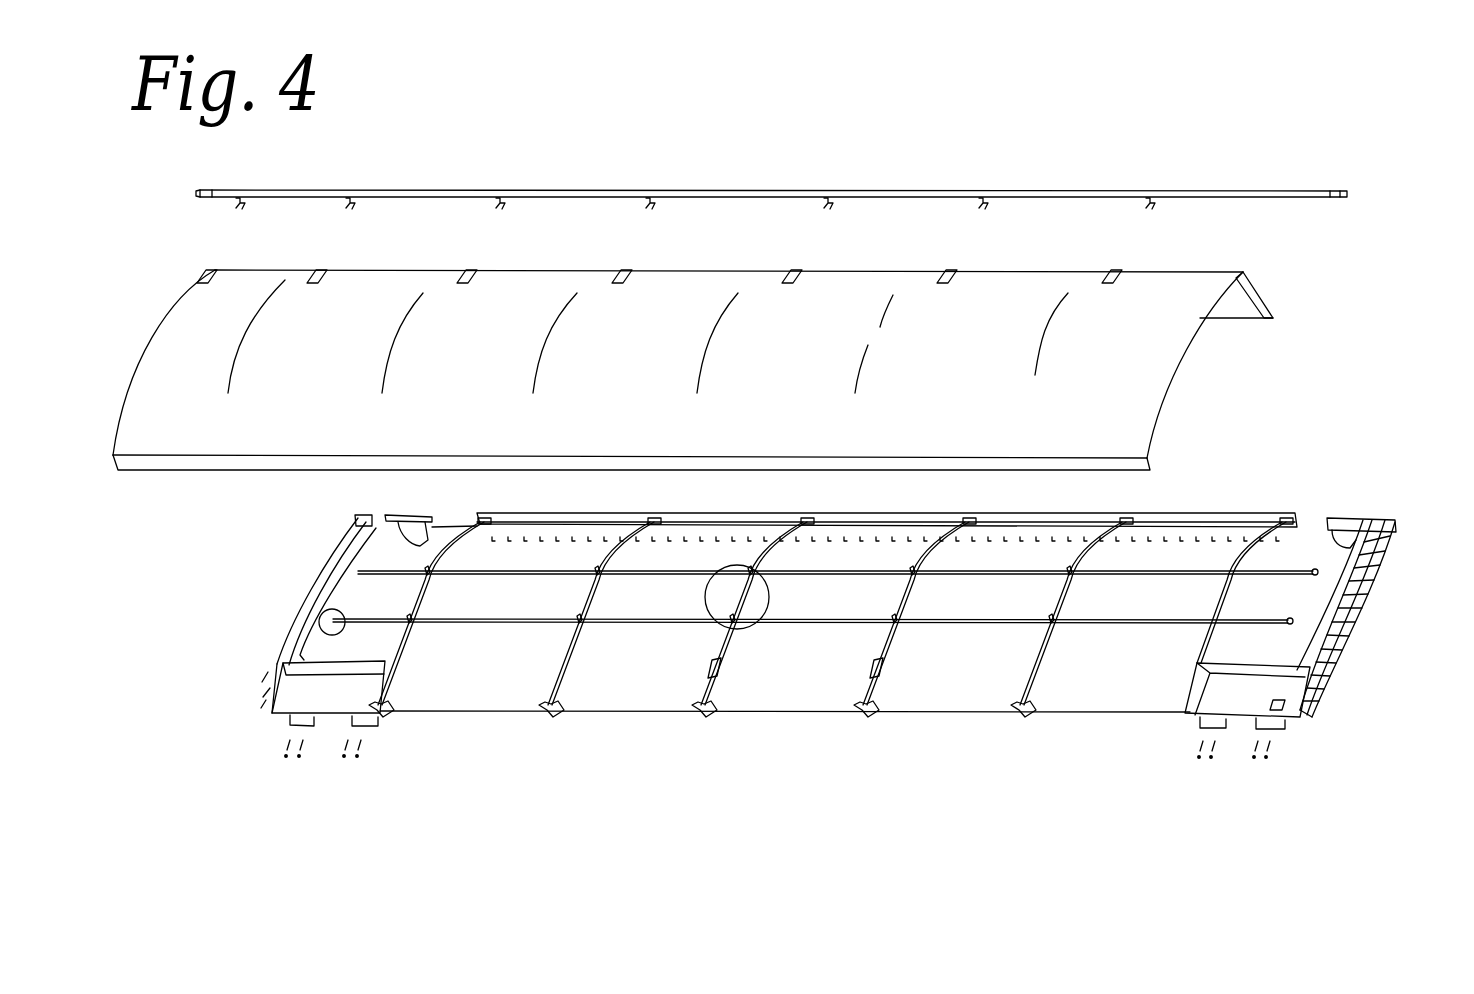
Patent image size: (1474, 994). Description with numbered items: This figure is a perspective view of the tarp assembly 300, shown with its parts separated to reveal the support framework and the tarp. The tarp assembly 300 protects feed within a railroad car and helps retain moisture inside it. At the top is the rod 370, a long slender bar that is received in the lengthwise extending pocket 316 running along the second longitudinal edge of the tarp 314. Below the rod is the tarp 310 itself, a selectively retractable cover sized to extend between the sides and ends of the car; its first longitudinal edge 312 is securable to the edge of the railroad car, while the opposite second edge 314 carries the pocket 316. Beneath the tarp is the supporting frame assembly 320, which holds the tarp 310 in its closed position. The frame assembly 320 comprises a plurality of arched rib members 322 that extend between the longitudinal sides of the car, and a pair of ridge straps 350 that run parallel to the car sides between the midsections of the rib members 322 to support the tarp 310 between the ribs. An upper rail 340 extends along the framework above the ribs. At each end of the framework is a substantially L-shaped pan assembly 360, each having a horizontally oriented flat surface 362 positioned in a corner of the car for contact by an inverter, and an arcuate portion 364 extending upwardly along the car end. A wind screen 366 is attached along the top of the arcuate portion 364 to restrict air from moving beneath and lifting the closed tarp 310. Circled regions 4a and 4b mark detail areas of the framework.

The tarp assembly 300 is at (748, 110).
The rod 370 is at (1224, 188).
The tarp 310 is at (1160, 384).
The first longitudinal edge 312 is at (1150, 466).
The second longitudinal edge of the tarp 314 is at (1238, 322).
The pocket 316 is at (1277, 306).
The supporting frame assembly 320 is at (985, 755).
The rib member 322 is at (1038, 670).
The top rail 340 is at (1200, 515).
The ridge strap 350 is at (815, 620).
The pan assembly 360 is at (1350, 633).
The flat surface 362 is at (1217, 700).
The arcuate portion 364 is at (1387, 553).
The wind screen 366 is at (1327, 585).
The detail region 4A 4a is at (322, 616).
The detail region 4B 4b is at (705, 605).